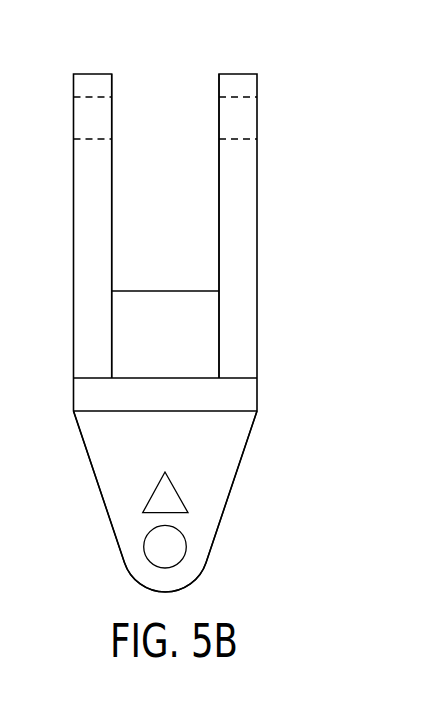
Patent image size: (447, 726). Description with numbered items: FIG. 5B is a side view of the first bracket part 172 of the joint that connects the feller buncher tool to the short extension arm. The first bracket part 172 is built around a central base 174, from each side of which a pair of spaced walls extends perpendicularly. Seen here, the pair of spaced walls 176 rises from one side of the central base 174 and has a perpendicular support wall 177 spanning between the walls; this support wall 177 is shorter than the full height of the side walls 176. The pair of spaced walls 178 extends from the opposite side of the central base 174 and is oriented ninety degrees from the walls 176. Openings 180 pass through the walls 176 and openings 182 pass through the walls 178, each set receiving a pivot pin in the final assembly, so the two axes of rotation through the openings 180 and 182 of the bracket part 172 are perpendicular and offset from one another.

The first bracket part 172 is at (272, 88).
The central base 174 is at (240, 389).
The pair of spaced walls 176 is at (100, 158).
The perpendicular support wall 177 is at (166, 305).
The pair of spaced walls 178 is at (220, 476).
The openings 180 is at (90, 97).
The openings 182 is at (150, 557).